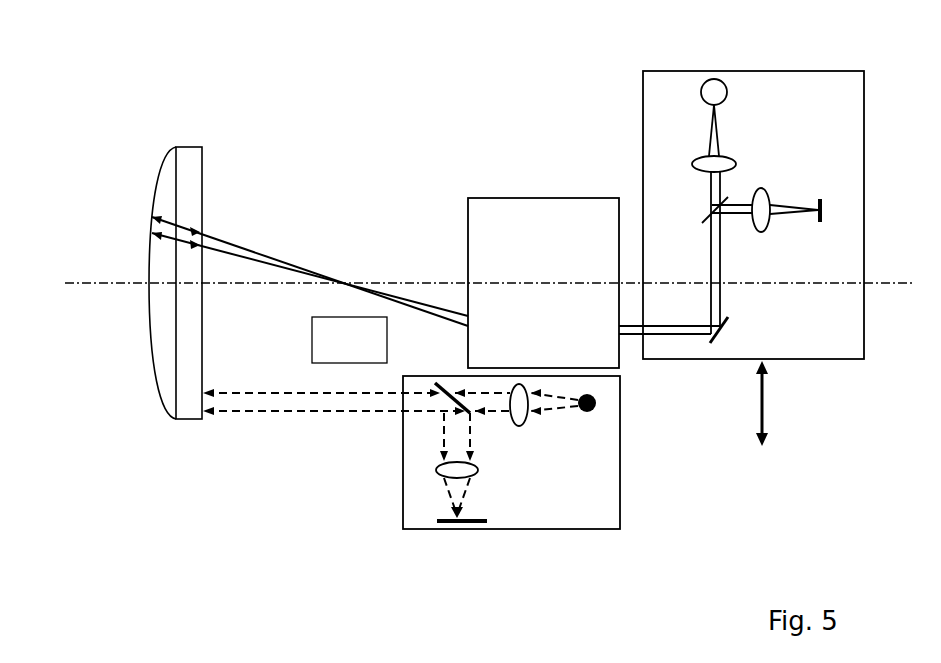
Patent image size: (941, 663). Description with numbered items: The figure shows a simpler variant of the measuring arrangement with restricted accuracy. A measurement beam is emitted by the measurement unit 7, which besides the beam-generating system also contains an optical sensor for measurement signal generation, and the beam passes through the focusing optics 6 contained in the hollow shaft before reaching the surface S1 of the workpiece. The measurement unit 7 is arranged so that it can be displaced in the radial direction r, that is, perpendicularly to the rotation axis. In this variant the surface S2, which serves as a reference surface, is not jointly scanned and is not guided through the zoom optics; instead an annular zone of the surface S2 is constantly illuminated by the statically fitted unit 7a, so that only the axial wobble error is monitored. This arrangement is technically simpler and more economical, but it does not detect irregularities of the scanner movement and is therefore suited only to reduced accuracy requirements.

The focusing optics 6 is at (542, 198).
The measurement unit 7 is at (753, 71).
The statically fitted unit 7a is at (620, 454).
The first beam S1 is at (285, 266).
The surface S2 is at (334, 387).
The radial direction r is at (774, 405).